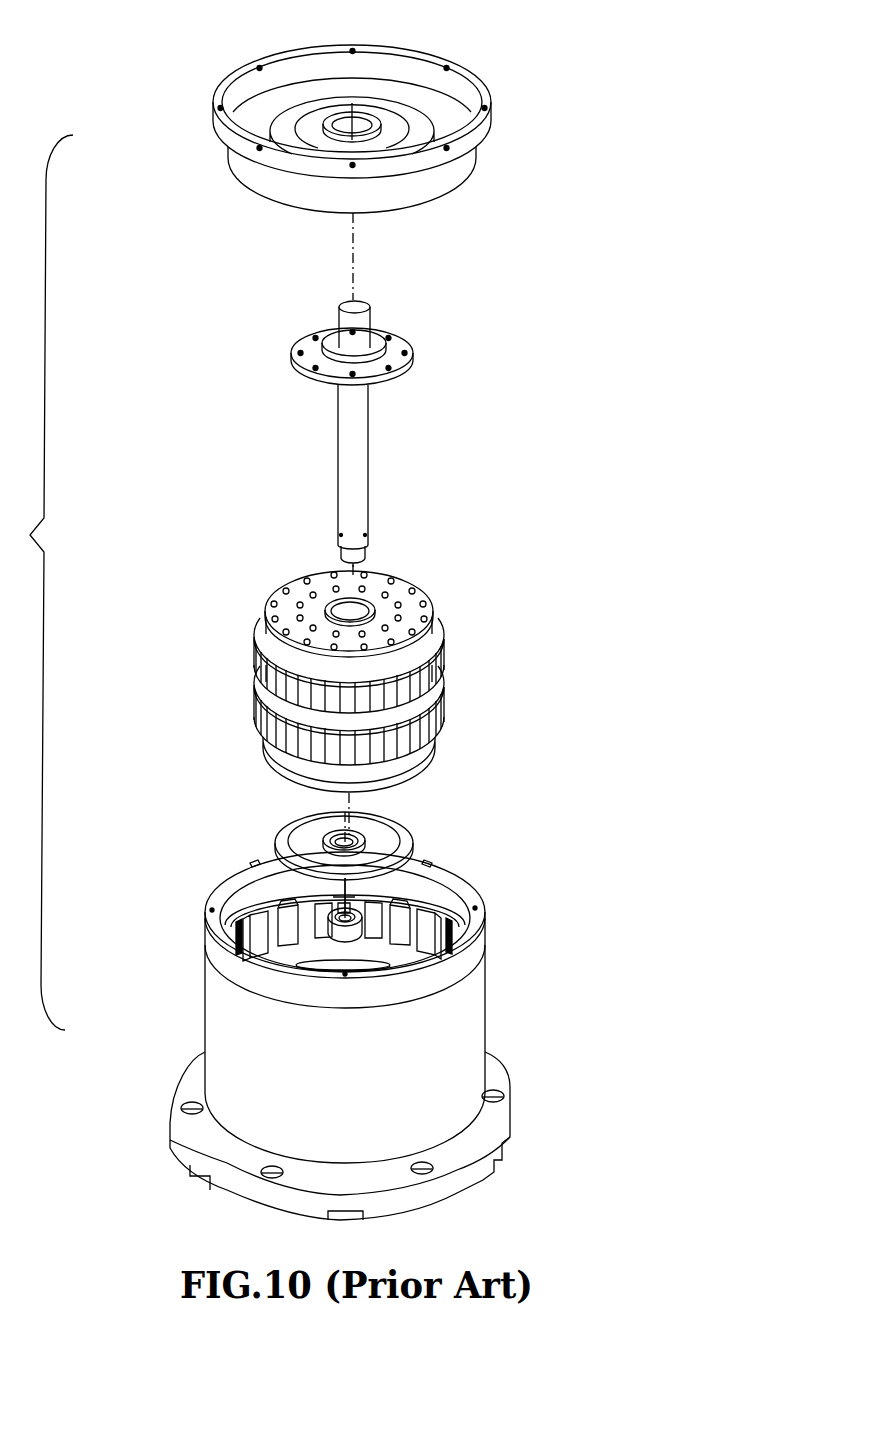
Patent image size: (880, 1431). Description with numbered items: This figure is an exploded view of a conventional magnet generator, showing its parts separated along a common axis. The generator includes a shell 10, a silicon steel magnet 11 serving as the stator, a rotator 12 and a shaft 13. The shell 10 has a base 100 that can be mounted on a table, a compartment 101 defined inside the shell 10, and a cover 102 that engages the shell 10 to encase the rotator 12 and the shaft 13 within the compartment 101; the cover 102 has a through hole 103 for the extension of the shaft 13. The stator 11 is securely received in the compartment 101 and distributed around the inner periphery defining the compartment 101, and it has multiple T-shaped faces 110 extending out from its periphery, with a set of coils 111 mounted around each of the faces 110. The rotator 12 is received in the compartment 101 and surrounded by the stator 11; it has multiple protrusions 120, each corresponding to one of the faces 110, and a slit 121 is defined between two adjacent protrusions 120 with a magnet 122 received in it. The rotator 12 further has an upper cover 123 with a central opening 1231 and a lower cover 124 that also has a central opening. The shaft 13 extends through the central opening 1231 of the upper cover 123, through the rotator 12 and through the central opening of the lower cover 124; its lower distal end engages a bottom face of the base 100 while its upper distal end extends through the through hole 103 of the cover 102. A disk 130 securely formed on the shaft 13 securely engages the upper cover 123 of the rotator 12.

The shell 10 is at (327, 1016).
The base 100 is at (187, 1092).
The compartment 101 is at (425, 882).
The cover 102 is at (364, 120).
The through hole 103 is at (363, 120).
The silicon steel magnet 11 is at (335, 925).
The T-shaped faces 110 is at (262, 933).
The sets of coils 111 is at (263, 910).
The rotator 12 is at (324, 662).
The protrusions 120 is at (430, 733).
The slit 121 is at (288, 669).
The magnet 122 is at (277, 688).
The upper cover 123 is at (338, 582).
The central opening 1231 is at (370, 573).
The lower cover 124 is at (420, 770).
The shaft 13 is at (382, 434).
The disk 130 is at (400, 338).